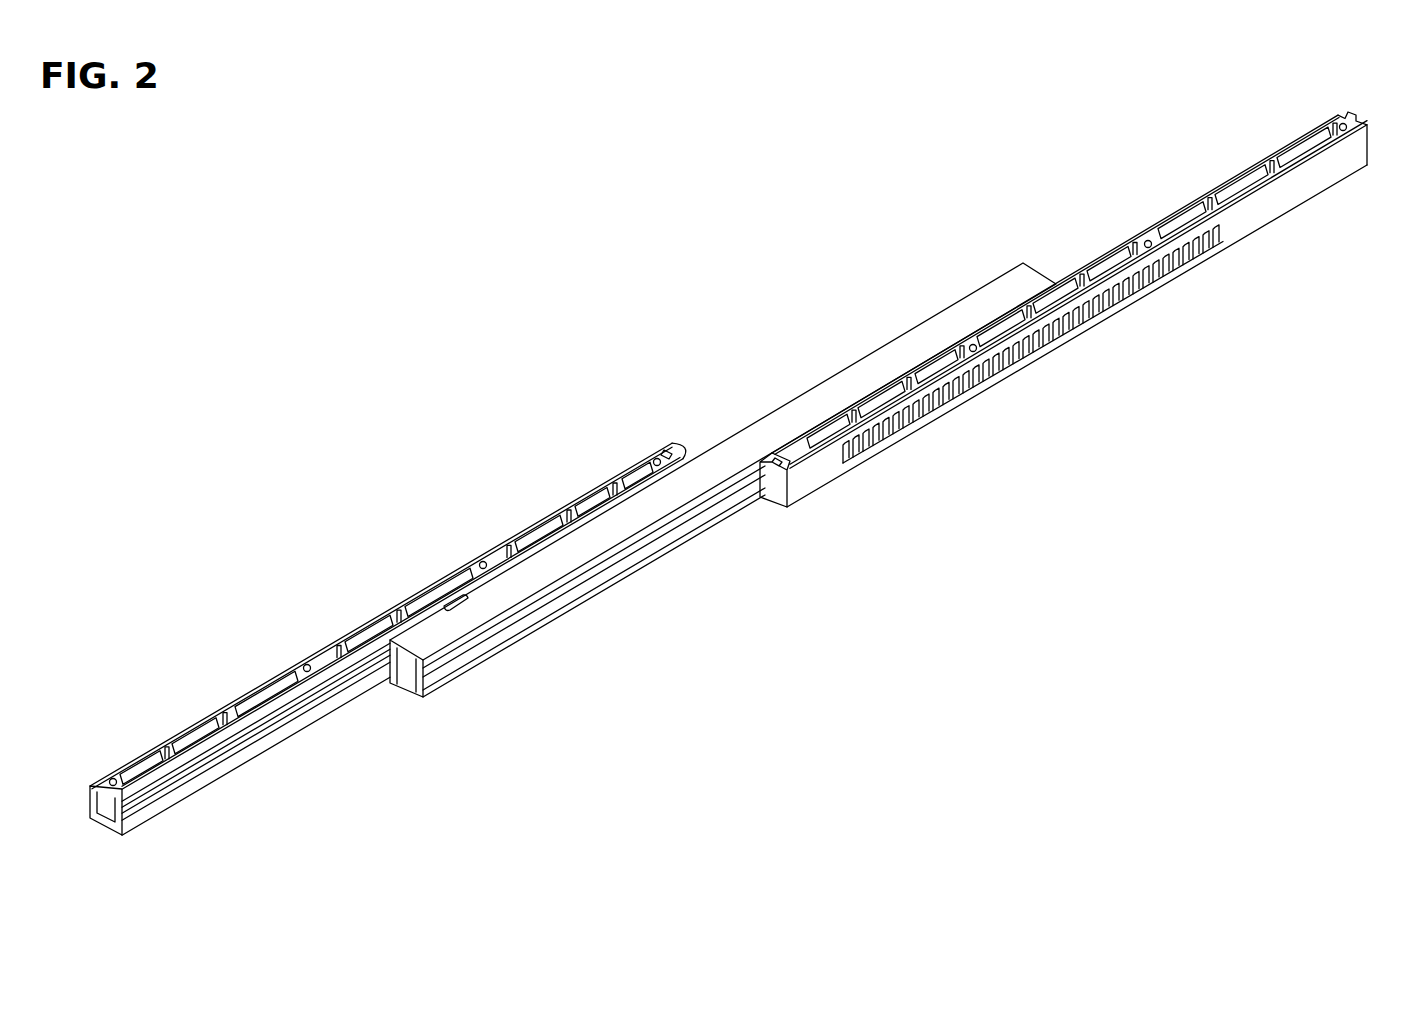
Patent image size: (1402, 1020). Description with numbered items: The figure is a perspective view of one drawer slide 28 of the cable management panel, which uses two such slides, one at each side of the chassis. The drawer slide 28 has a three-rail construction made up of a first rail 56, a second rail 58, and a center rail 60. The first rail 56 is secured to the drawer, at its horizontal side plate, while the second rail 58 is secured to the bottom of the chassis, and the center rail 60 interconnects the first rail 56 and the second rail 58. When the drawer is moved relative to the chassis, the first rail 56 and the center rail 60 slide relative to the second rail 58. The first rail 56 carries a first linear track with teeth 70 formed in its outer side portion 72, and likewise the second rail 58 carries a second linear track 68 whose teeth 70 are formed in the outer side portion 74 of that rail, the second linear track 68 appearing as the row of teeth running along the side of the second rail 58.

The drawer slide 28 is at (488, 355).
The first rail 56 is at (340, 640).
The second rail 58 is at (1223, 188).
The center rail 60 is at (779, 420).
The second linear track 68 is at (1078, 330).
The teeth 70 is at (982, 390).
The outer side portion 72 is at (487, 553).
The outer side portion 74 is at (1255, 212).